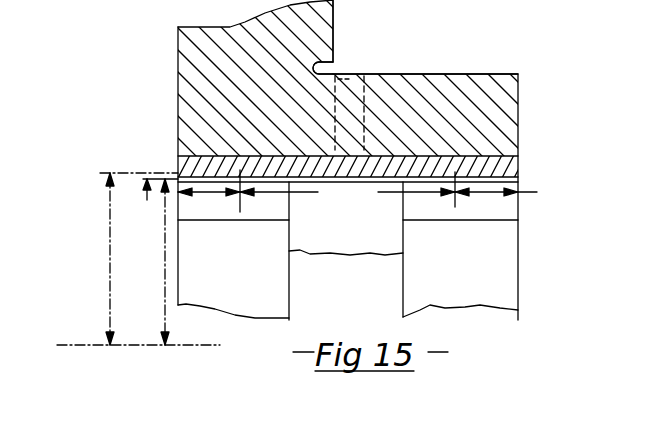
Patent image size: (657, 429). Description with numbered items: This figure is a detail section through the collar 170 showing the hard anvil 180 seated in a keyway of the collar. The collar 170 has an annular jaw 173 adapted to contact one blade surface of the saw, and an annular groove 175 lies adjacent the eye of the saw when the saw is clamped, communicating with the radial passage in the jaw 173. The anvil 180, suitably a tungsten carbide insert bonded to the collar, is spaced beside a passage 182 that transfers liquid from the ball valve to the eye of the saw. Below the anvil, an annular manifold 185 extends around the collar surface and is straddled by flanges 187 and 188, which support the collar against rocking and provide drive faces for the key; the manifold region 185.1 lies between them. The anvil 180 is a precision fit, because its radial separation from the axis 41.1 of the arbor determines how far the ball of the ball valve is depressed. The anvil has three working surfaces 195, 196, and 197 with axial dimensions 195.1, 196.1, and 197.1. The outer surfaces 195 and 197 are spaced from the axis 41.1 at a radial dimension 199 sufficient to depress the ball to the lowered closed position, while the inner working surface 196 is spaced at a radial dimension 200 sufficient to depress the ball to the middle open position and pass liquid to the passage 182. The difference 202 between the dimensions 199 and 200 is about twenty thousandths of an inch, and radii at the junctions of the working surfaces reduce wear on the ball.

The collar 170 is at (577, 93).
The annular jaw 173 is at (333, 14).
The annular groove 175 is at (340, 73).
The passage 182 is at (410, 76).
The hard anvil 180 is at (503, 166).
The outer working surface 197 is at (518, 192).
The axial dimension 197.1 is at (492, 193).
The flange 188 is at (250, 283).
The flange 187 is at (480, 283).
The gap bottom 185.1 is at (378, 243).
The annular manifold 185 is at (373, 268).
The outer working surface 195 is at (230, 150).
The inner working surface 196 is at (308, 172).
The axial dimension 195.1 is at (248, 193).
The axial dimension 196.1 is at (388, 189).
The difference in radial dimensions 202 is at (147, 173).
The radial dimension 200 is at (110, 258).
The radial dimension 199 is at (156, 262).
The axis 41.1 is at (179, 345).